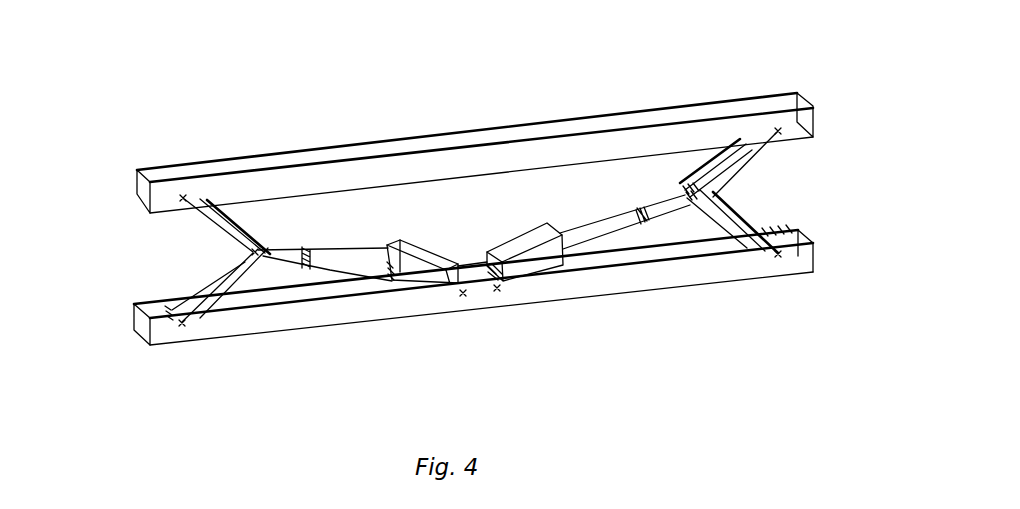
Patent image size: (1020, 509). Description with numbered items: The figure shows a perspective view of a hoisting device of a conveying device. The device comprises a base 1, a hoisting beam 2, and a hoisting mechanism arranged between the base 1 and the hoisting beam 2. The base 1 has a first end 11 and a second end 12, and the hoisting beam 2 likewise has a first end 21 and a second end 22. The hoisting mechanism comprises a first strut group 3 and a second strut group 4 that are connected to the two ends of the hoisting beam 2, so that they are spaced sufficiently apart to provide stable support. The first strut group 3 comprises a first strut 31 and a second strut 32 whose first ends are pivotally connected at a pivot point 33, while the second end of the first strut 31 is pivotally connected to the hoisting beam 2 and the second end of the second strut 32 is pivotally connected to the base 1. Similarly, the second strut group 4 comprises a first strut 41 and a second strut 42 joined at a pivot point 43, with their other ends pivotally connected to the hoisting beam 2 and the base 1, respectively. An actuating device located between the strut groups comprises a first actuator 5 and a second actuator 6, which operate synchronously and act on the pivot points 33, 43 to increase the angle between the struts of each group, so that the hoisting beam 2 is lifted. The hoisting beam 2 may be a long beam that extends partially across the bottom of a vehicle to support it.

The base 1 is at (438, 325).
The first end 11 is at (167, 337).
The second end 12 is at (781, 280).
The hoisting beam 2 is at (475, 116).
The first end 21 is at (160, 197).
The second end 22 is at (793, 78).
The first strut group 3 is at (178, 264).
The first strut 31 is at (237, 230).
The second strut 32 is at (217, 288).
The pivot point 33 is at (87, 269).
The second strut group 4 is at (712, 192).
The first strut 41 is at (723, 167).
The second strut 42 is at (747, 232).
The pivot point 43 is at (578, 192).
The first actuator 5 is at (360, 258).
The second actuator 6 is at (585, 238).